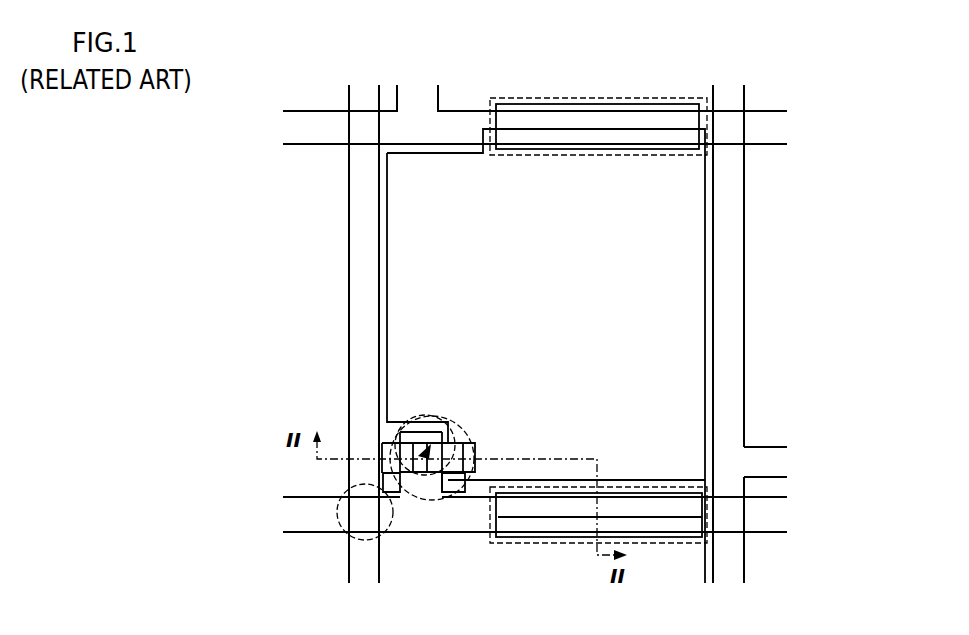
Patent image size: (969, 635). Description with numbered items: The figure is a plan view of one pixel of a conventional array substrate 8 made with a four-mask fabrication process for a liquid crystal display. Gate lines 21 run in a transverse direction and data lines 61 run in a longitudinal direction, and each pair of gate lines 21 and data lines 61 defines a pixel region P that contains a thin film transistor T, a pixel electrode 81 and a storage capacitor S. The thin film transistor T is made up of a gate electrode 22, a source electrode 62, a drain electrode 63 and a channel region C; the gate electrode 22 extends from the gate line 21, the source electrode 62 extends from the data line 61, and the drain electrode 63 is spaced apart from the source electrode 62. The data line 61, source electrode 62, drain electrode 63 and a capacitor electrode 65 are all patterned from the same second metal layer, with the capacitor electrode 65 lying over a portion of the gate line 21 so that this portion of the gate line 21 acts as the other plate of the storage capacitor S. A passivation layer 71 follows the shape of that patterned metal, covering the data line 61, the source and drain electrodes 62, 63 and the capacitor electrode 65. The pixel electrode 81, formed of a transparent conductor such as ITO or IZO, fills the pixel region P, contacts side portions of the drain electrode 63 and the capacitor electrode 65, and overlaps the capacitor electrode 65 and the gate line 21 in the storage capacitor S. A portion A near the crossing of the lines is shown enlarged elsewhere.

The array substrate 8 is at (265, 331).
The gate line 21 is at (590, 148).
The gate electrode 22 is at (425, 431).
The data line 61 is at (349, 243).
The source electrode 62 is at (407, 480).
The drain electrode 63 is at (462, 480).
The capacitor electrode 65 is at (533, 155).
The passivation layer 71 is at (365, 221).
The pixel electrode 81 is at (387, 186).
The storage capacitor S is at (600, 98).
The thin film transistor T is at (468, 434).
The channel region C is at (450, 413).
The portion A is at (346, 530).
The pixel region P is at (668, 333).